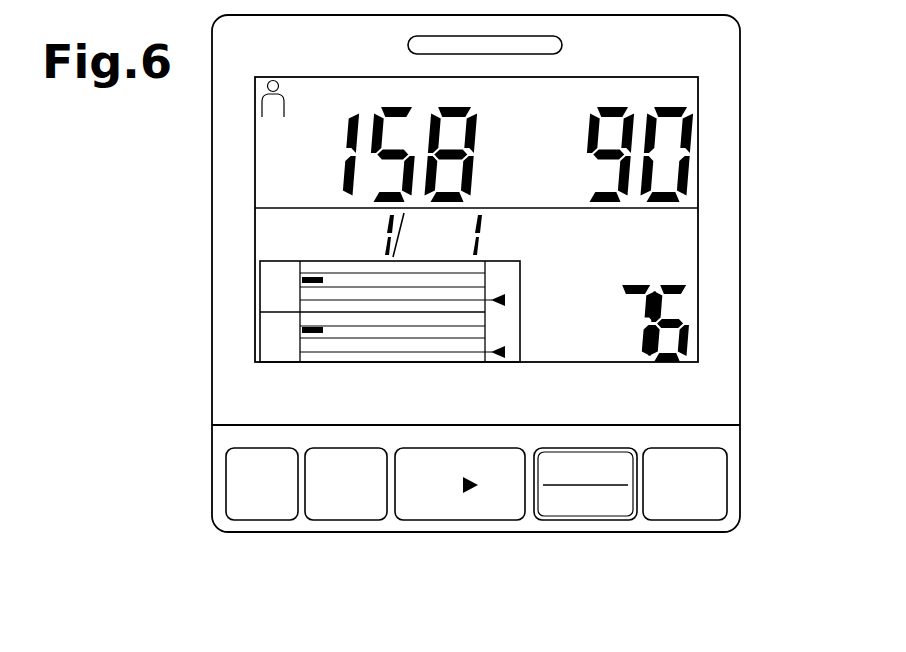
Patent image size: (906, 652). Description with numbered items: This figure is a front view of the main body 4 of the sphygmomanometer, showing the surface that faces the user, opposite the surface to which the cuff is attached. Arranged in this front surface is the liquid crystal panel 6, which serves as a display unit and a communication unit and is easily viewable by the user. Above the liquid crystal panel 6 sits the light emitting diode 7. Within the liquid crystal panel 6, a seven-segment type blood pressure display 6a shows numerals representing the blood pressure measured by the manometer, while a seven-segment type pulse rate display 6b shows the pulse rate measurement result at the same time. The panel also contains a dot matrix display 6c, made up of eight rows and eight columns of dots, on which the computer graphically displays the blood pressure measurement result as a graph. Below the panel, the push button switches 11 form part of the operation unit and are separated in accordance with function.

The main body 4 is at (740, 22).
The light emitting diode (LED) 7 is at (562, 45).
The liquid crystal panel 6 is at (698, 225).
The blood pressure display 6a is at (562, 190).
The pulse rate display 6b is at (596, 328).
The dot matrix display 6c is at (357, 250).
The push button switches 11 is at (680, 520).